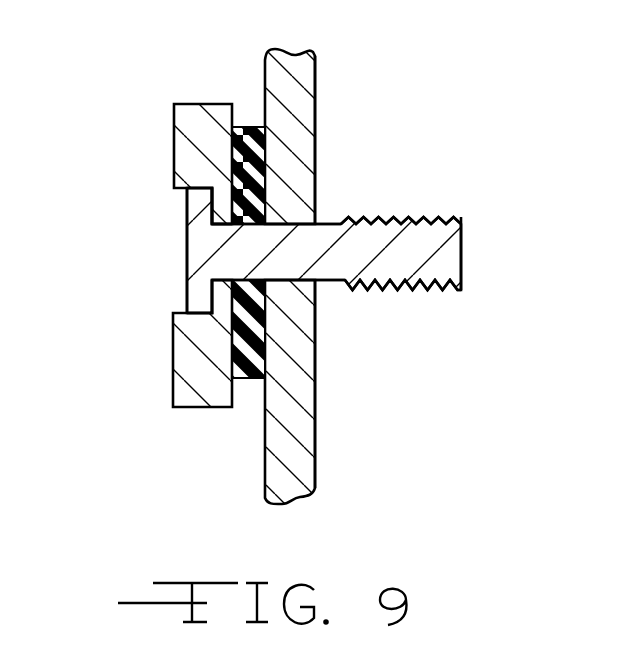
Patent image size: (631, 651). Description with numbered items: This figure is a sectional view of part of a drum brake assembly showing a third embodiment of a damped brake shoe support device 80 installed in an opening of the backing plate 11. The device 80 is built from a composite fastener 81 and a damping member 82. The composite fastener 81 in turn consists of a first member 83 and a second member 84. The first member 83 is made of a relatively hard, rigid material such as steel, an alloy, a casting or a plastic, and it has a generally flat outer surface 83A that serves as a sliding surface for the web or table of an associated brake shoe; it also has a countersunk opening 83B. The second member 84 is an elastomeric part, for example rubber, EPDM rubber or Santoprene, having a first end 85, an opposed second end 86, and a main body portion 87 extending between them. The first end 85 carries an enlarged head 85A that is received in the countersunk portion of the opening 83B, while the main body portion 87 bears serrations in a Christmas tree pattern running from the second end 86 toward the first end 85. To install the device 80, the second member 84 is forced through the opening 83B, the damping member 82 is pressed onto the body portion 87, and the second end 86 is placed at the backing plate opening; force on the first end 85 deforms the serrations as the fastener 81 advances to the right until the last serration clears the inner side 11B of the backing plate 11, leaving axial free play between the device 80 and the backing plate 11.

The backing plate 11 is at (303, 478).
The inner side of the backing plate 11B is at (315, 438).
The damped brake shoe support device 80 is at (411, 88).
The composite fastener 81 is at (152, 253).
The damping member 82 is at (250, 378).
The first member 83 is at (180, 413).
The outer surface 83A is at (173, 138).
The countersunk opening 83B is at (218, 226).
The second member 84 is at (332, 212).
The first end 85 is at (187, 268).
The enlarged head 85A is at (187, 300).
The second end 86 is at (462, 249).
The main body portion 87 is at (327, 282).